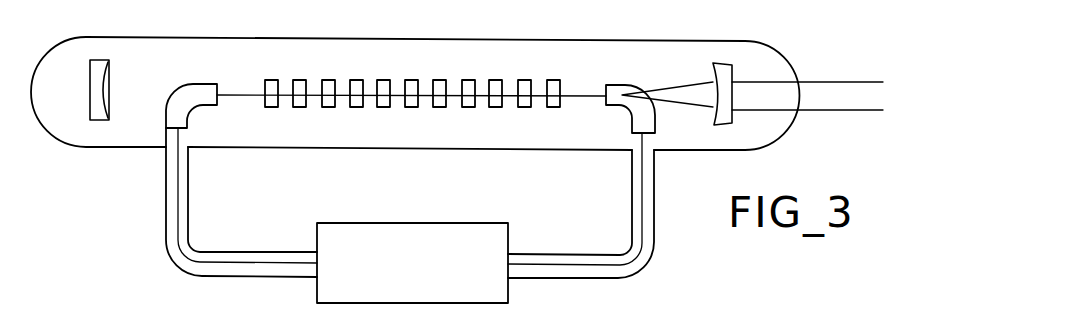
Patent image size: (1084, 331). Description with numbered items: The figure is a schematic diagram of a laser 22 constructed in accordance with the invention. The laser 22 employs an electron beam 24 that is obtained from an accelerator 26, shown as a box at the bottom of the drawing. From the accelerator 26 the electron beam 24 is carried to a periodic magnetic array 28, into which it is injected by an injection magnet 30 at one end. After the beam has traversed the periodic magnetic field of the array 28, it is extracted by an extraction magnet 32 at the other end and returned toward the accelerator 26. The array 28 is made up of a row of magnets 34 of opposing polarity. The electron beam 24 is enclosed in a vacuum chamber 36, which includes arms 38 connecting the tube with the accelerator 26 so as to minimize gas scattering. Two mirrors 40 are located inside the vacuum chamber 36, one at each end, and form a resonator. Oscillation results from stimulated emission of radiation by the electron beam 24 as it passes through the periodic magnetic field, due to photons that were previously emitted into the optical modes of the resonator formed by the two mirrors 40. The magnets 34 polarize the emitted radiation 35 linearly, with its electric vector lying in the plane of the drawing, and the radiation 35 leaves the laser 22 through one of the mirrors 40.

The laser 22 is at (356, 37).
The electron beam 24 is at (178, 176).
The accelerator 26 is at (360, 223).
The periodic magnetic array 28 is at (445, 64).
The injection magnet 30 is at (200, 83).
The extraction magnet 32 is at (627, 83).
The magnets 34 is at (330, 78).
The emitted radiation 35 is at (828, 80).
The vacuum chamber 36 is at (572, 40).
The arms 38 is at (165, 250).
The mirrors 40 is at (97, 66).